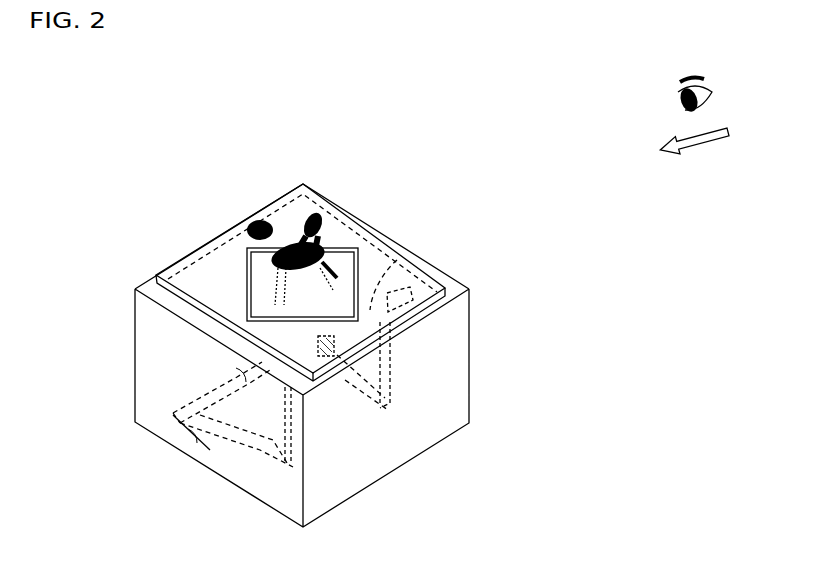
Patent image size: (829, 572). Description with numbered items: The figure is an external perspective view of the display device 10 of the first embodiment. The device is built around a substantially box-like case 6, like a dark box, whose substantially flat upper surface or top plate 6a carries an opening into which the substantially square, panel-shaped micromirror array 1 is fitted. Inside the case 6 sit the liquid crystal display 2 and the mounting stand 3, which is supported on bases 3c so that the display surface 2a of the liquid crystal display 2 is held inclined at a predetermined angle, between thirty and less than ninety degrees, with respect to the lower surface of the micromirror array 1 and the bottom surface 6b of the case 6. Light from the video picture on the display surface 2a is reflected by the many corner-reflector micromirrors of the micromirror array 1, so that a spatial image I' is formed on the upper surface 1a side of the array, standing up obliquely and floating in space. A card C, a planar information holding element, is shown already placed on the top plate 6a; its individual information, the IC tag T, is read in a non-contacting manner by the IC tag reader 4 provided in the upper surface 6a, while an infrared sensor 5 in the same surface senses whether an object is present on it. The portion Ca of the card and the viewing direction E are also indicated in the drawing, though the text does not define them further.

The micromirror array 1 is at (342, 266).
The upper surface 1a is at (347, 262).
The liquid crystal display 2 is at (175, 425).
The display surface 2a is at (205, 395).
The mounting stand 3 is at (400, 382).
The bases 3c is at (236, 484).
The IC tag reader 4 is at (396, 360).
The infrared sensor 5 is at (323, 390).
The case 6 is at (406, 475).
The upper surface 6a is at (312, 188).
The bottom surface 6b is at (372, 443).
The display device 10 is at (497, 343).
The card C is at (216, 226).
The image portion Ca is at (247, 285).
The spatial image I' is at (275, 183).
The IC tag T is at (400, 256).
The observer eye direction E is at (694, 135).